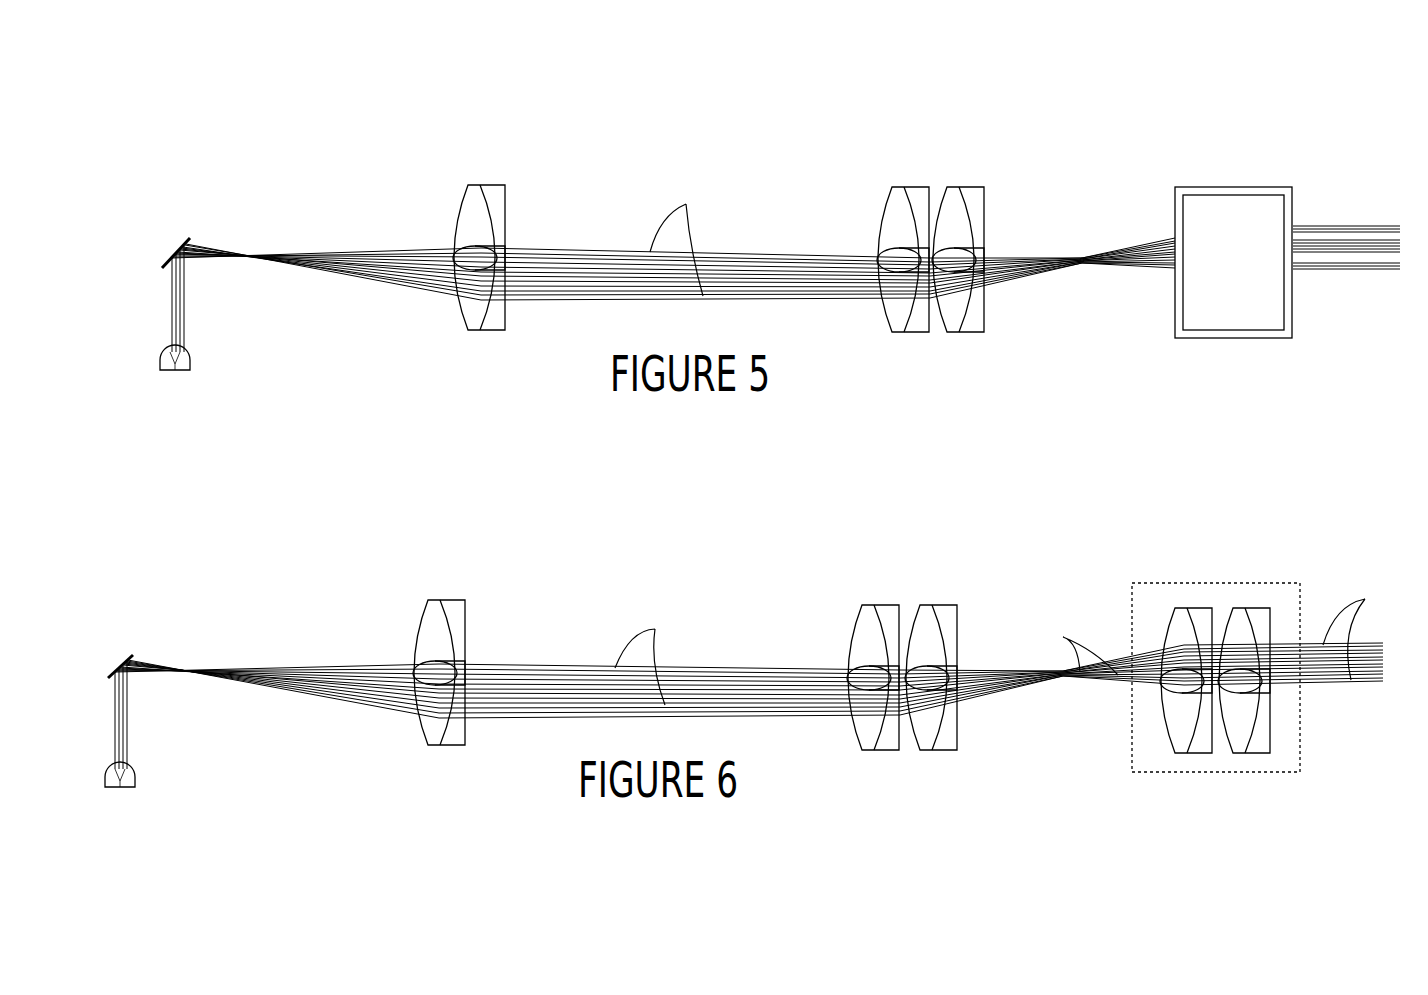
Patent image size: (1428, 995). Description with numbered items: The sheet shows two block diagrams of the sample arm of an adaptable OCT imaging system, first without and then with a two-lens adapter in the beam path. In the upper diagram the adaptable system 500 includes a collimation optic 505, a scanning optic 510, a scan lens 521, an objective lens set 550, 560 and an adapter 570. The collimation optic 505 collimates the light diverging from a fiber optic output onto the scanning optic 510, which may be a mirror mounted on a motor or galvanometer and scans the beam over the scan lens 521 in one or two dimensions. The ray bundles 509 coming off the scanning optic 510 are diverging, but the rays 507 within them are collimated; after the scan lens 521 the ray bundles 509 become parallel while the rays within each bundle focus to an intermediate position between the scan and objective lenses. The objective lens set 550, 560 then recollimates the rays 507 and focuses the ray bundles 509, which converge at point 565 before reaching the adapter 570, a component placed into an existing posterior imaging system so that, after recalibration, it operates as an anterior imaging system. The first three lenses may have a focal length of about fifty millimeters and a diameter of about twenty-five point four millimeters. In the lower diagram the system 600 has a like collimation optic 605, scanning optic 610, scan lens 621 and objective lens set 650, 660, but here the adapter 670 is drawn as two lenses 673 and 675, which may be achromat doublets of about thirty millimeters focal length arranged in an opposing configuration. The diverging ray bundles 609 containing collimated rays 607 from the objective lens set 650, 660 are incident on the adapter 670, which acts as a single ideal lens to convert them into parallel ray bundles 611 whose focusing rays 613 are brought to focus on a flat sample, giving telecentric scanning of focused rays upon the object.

In FIG. 5, the adaptable system 500 is at (1036, 120).
In FIG. 5, the collimation optic 505 is at (176, 372).
In FIG. 5, the rays 507 is at (575, 253).
In FIG. 5, the ray bundles 509 is at (687, 243).
In FIG. 5, the scanning optic 510 is at (178, 246).
In FIG. 5, the scan lens 521 is at (490, 331).
In FIG. 5, the objective lens 550 is at (895, 332).
In FIG. 5, the objective lens 560 is at (962, 332).
In FIG. 5, the converging point 565 is at (1082, 258).
In FIG. 5, the adapter 570 is at (1256, 278).
In FIG. 6, the system 600 is at (1066, 535).
In FIG. 6, the collimation optic 605 is at (120, 790).
In FIG. 6, the collimated rays 607 is at (525, 668).
In FIG. 6, the diverging ray bundles 609 is at (866, 659).
In FIG. 6, the scanning optic 610 is at (125, 660).
In FIG. 6, the parallel ray bundles 611 is at (1363, 633).
In FIG. 6, the focusing rays 613 is at (1328, 683).
In FIG. 6, the scan lens 621 is at (446, 745).
In FIG. 6, the objective lens 650 is at (862, 749).
In FIG. 6, the objective lens 660 is at (935, 749).
In FIG. 6, the adapter 670 is at (1224, 583).
In FIG. 6, the lens 673 is at (1180, 752).
In FIG. 6, the lens 675 is at (1246, 752).